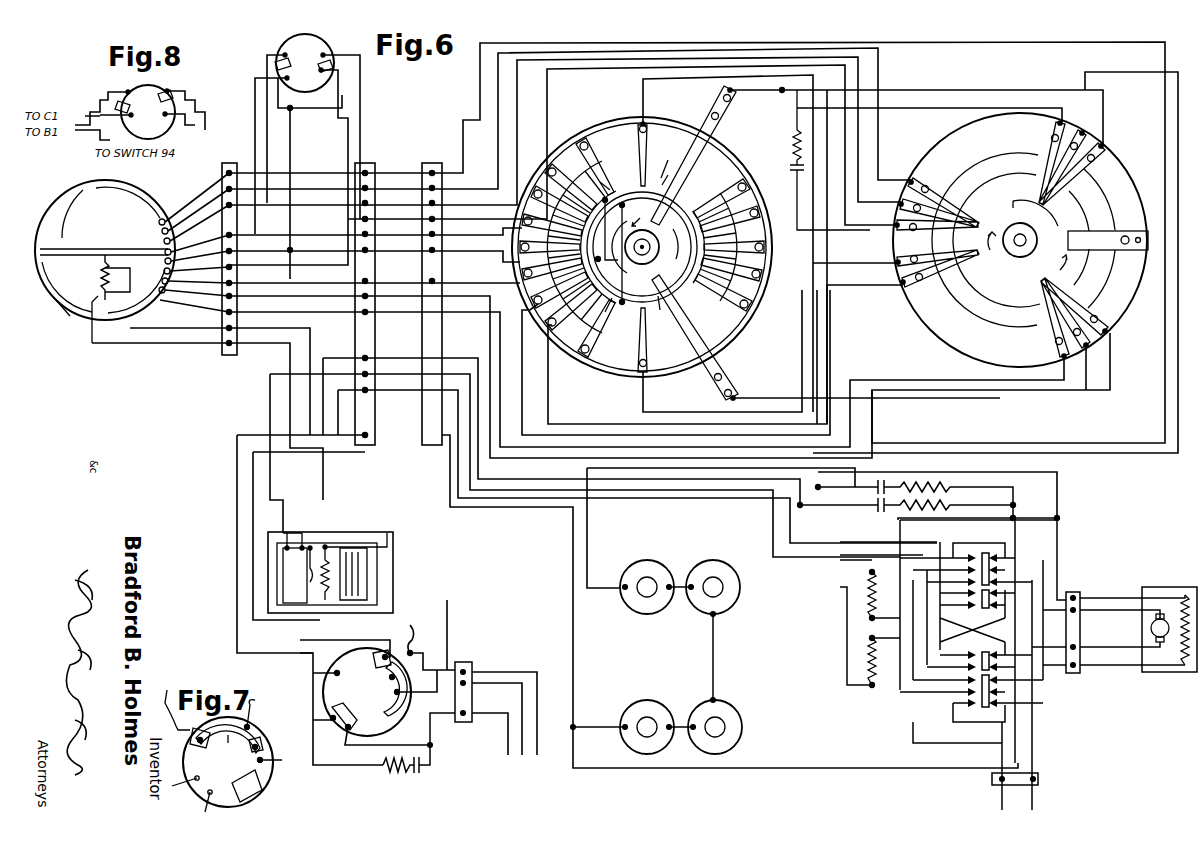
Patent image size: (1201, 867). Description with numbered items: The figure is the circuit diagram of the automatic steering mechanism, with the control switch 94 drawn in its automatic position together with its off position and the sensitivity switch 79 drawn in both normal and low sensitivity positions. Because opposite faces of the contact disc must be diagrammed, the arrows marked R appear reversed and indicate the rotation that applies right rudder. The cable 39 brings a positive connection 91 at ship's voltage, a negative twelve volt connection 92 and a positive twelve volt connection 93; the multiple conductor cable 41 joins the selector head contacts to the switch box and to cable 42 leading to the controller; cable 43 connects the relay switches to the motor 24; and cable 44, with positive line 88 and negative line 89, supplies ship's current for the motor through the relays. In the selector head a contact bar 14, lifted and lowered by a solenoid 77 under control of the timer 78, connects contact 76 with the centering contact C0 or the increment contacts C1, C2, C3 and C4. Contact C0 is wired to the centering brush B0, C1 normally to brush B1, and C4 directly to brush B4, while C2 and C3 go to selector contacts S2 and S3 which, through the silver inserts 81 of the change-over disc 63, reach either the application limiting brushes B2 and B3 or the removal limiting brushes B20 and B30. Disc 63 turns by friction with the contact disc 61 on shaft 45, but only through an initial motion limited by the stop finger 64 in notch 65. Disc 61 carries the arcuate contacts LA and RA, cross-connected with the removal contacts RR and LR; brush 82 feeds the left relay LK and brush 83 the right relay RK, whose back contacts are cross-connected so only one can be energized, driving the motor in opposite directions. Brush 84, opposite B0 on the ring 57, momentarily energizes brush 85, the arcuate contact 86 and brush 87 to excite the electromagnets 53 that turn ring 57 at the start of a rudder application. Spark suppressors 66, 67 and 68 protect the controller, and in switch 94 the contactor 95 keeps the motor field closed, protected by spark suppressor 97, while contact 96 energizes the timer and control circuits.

In FIG. 6, the contact bar 14 is at (86, 250).
In FIG. 6, the motor 24 is at (1158, 590).
In FIG. 6, the cable 39 is at (503, 741).
In FIG. 6, the multiple conductor cable 41 is at (249, 160).
In FIG. 6, the multiple conductor cable 42 is at (428, 160).
In FIG. 6, the multiple conductor cable 43 is at (1138, 588).
In FIG. 6, the cable 44 is at (1040, 797).
In FIG. 6, the shaft 45 is at (1025, 235).
In FIG. 6, the electromagnets 53 is at (700, 566).
In FIG. 6, the ring 57 is at (603, 132).
In FIG. 6, the contact disc 61 is at (992, 176).
In FIG. 6, the second disc 63 is at (1087, 304).
In FIG. 6, the stop finger 64 is at (1100, 250).
In FIG. 6, the notch 65 is at (1075, 222).
In FIG. 6, the spark suppressor 66 is at (925, 486).
In FIG. 6, the spark suppressor 67 is at (955, 508).
In FIG. 6, the spark suppressor 68 is at (790, 140).
In FIG. 6, the contact 76 is at (57, 317).
In FIG. 6, the solenoid 77 is at (100, 270).
In FIG. 7, the timer 78 is at (276, 704).
In FIG. 6, the timer 78 is at (310, 542).
In FIG. 8, the sensitivity switch 79 is at (162, 80).
In FIG. 7, the sensitivity switch 79 is at (194, 693).
In FIG. 6, the sensitivity switch 79 is at (300, 48).
In FIG. 6, the silver inserts 81 is at (1030, 205).
In FIG. 6, the brush 82 is at (640, 128).
In FIG. 6, the brush 83 is at (640, 351).
In FIG. 6, the brush 84 is at (742, 253).
In FIG. 6, the brush 85 is at (705, 122).
In FIG. 6, the arcuate contact 86 is at (657, 262).
In FIG. 6, the brush 87 is at (700, 343).
In FIG. 6, the positive line 88 is at (993, 782).
In FIG. 6, the negative line 89 is at (1035, 786).
In FIG. 6, the positive connection 91 is at (508, 722).
In FIG. 6, the negative 12 volt connection 92 is at (530, 712).
In FIG. 6, the positive 12 volt connection 93 is at (540, 738).
In FIG. 7, the switch 94 is at (277, 773).
In FIG. 6, the switch 94 is at (384, 728).
In FIG. 7, the contactor 95 is at (250, 792).
In FIG. 6, the contactor 95 is at (352, 709).
In FIG. 7, the contact 96 is at (226, 746).
In FIG. 6, the contact 96 is at (375, 672).
In FIG. 6, the spark suppressor 97 is at (390, 770).
In FIG. 6, the centering brush B0 is at (525, 252).
In FIG. 6, the first increment brush B1 is at (526, 213).
In FIG. 6, the application limiting brush B2 is at (538, 190).
In FIG. 6, the brush B3 is at (560, 180).
In FIG. 6, the brush B4 is at (590, 152).
In FIG. 6, the removal limiting brush B20 is at (760, 285).
In FIG. 6, the brush B30 is at (728, 305).
In FIG. 6, the centering contact C0 is at (165, 261).
In FIG. 6, the first increment contact C1 is at (162, 241).
In FIG. 6, the second increment contact C2 is at (160, 231).
In FIG. 6, the third increment contact C3 is at (158, 221).
In FIG. 6, the fourth increment contact C4 is at (125, 200).
In FIG. 6, the left application contact LA is at (612, 178).
In FIG. 6, the left removal contact LR is at (659, 165).
In FIG. 6, the right application contact RA is at (611, 314).
In FIG. 6, the right removal contact RR is at (657, 313).
In FIG. 6, the rotation arrows R is at (849, 244).
In FIG. 6, the selector contact S2 is at (905, 290).
In FIG. 6, the selector contact S3 is at (1092, 345).
In FIG. 6, the left relay LK is at (878, 588).
In FIG. 6, the right relay RK is at (871, 674).